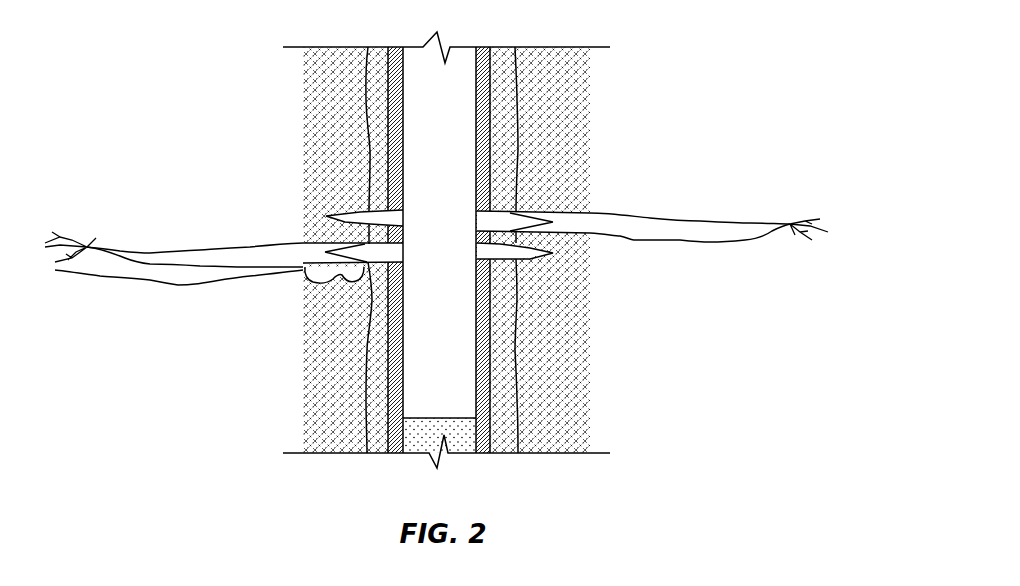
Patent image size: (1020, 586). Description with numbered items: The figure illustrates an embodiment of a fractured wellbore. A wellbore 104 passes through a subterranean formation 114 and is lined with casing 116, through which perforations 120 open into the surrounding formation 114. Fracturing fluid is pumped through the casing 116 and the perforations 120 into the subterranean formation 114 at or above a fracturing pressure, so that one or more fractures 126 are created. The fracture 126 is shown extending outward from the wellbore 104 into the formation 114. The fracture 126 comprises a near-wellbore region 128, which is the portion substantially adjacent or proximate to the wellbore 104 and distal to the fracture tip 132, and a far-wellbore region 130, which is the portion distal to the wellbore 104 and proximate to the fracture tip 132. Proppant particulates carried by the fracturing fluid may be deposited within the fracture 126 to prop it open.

The wellbore 104 is at (517, 97).
The subterranean formation 114 is at (357, 173).
The casing 116 is at (490, 157).
The perforations 120 is at (505, 212).
The fracture 126 is at (150, 253).
The near-wellbore region 128 is at (342, 283).
The far-wellbore region 130 is at (178, 285).
The fracture tip 132 is at (92, 242).